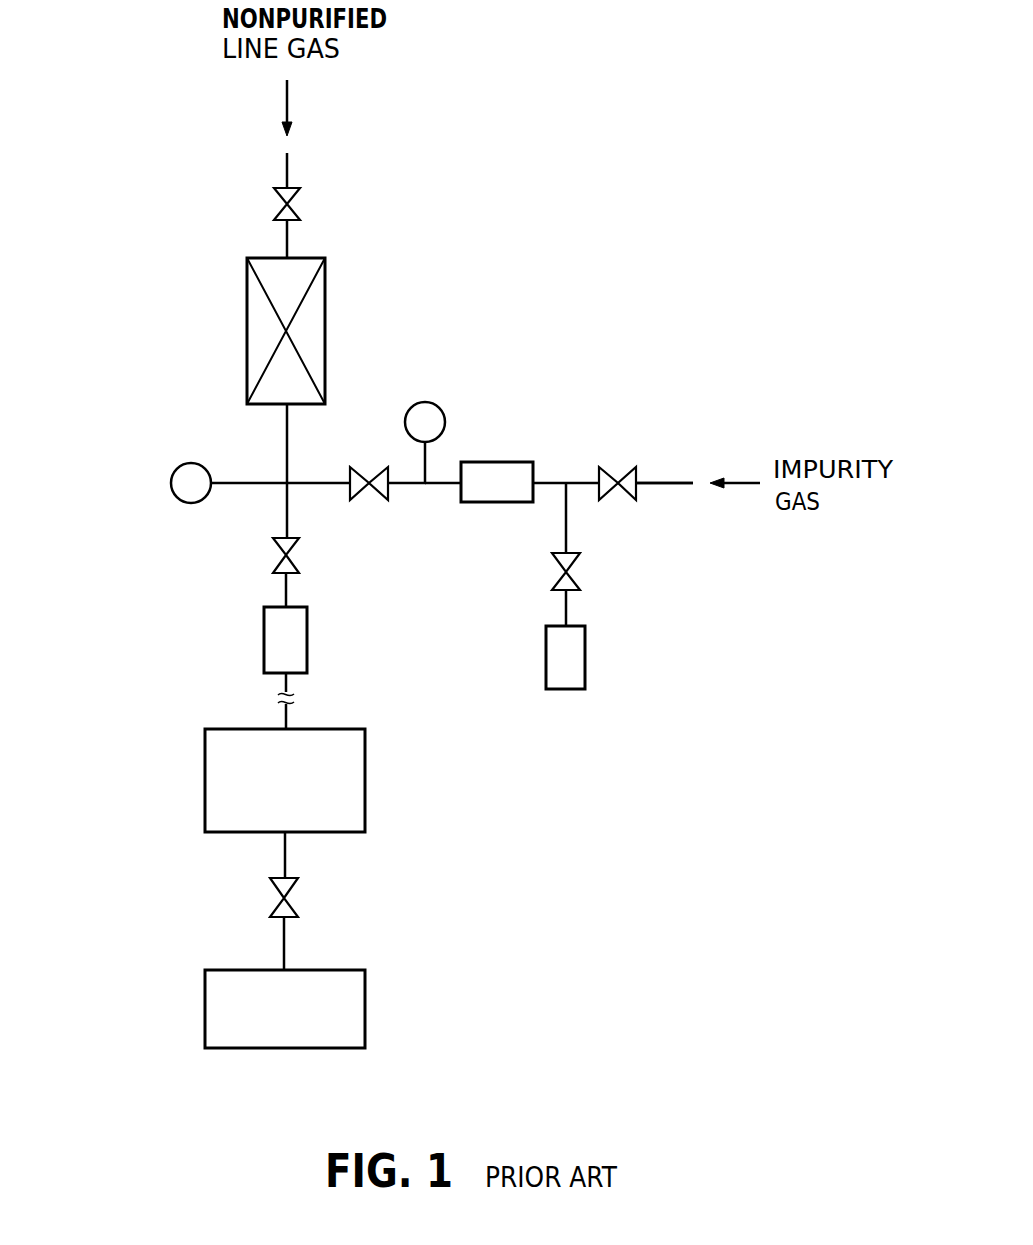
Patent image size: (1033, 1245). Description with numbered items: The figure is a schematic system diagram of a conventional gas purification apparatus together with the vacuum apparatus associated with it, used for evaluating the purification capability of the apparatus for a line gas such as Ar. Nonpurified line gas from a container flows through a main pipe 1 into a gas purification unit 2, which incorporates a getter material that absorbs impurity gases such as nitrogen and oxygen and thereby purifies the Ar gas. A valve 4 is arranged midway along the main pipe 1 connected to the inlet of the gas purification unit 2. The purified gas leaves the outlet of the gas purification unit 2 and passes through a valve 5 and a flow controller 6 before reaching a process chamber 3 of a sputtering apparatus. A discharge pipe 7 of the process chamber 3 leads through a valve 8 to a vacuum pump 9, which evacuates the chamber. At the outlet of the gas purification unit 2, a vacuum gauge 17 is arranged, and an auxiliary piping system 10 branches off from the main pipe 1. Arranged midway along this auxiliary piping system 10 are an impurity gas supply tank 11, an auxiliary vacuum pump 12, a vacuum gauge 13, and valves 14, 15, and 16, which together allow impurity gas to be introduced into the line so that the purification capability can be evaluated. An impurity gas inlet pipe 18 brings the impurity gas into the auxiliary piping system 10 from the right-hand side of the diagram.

The main pipe 1 is at (287, 165).
The gas purification unit 2 is at (247, 304).
The process chamber 3 is at (365, 782).
The valve 4 is at (276, 205).
The valve 5 is at (274, 556).
The flow controller 6 is at (264, 655).
The discharge pipe 7 is at (286, 863).
The valve 8 is at (299, 906).
The vacuum pump 9 is at (365, 1012).
The auxiliary piping system 10 is at (427, 502).
The impurity gas supply tank 11 is at (490, 462).
The auxiliary vacuum pump 12 is at (585, 648).
The vacuum gauge 13 is at (418, 402).
The valve 14 is at (374, 500).
The valve 15 is at (612, 467).
The valve 16 is at (580, 565).
The vacuum gauge 17 is at (185, 465).
The impurity gas inlet pipe 18 is at (665, 483).